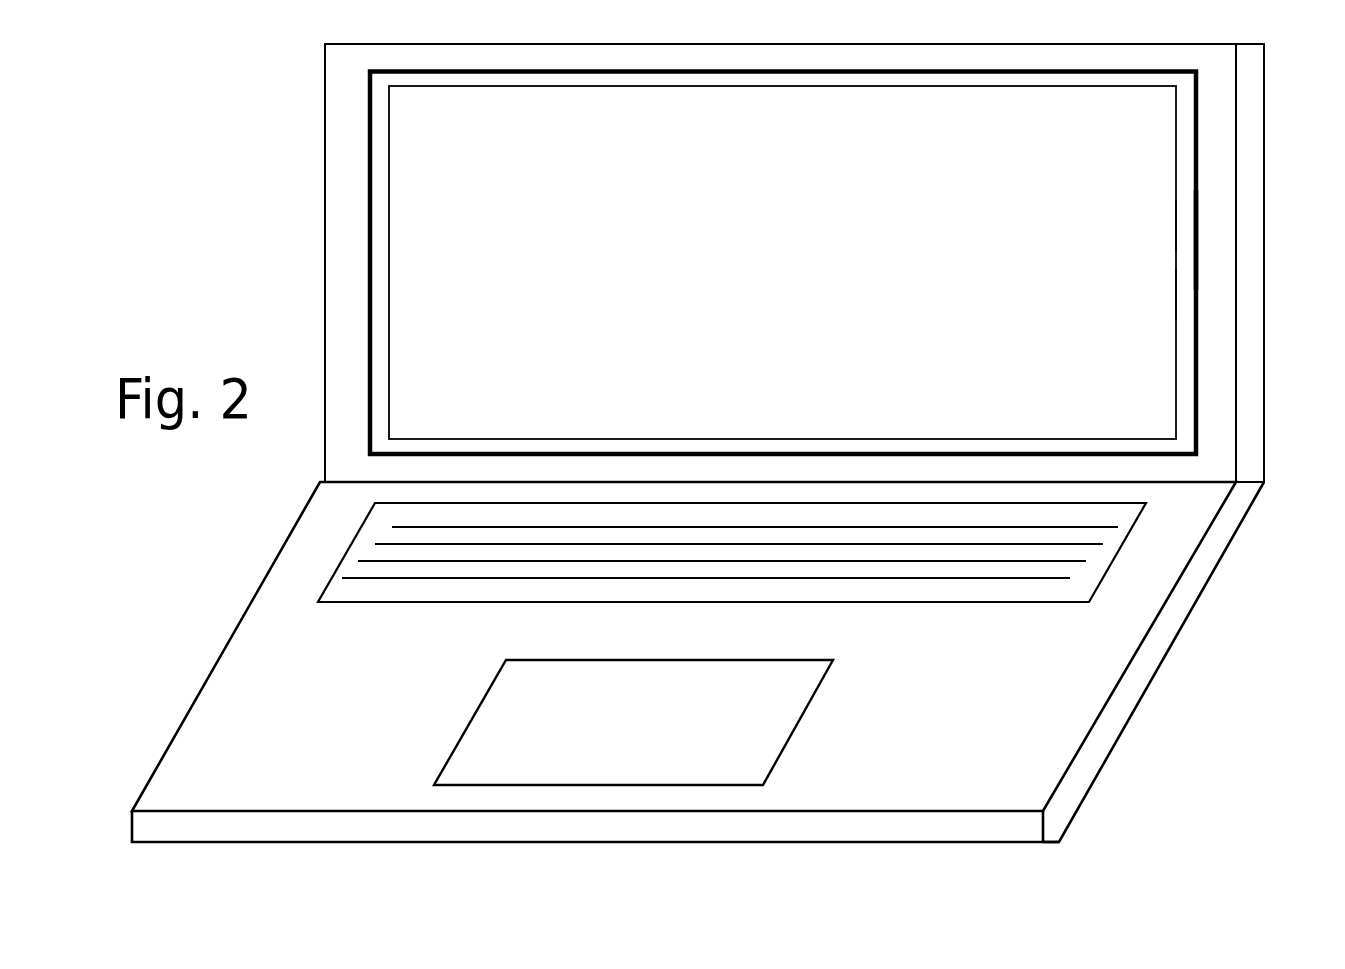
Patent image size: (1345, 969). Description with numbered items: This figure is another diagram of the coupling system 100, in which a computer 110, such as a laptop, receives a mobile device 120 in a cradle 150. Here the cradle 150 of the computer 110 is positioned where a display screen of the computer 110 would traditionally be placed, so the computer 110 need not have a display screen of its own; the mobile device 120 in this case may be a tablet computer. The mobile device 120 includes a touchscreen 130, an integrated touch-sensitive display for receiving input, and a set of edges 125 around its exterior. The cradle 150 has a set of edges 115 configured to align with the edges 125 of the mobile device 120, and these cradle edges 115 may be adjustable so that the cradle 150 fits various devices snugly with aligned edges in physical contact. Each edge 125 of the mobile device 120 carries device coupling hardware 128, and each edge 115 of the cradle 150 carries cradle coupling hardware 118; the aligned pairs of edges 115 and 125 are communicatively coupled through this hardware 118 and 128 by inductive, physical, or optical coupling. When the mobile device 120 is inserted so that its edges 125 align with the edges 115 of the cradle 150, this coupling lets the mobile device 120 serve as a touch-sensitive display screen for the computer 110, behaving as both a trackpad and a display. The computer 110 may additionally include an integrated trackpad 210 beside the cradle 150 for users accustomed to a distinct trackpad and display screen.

The coupling system 100 is at (220, 108).
The computer 110 is at (312, 223).
The cradle edges 115 is at (1198, 215).
The cradle coupling hardware 118 is at (1198, 263).
The mobile device 120 is at (804, 277).
The device edges 125 is at (1176, 295).
The device coupling hardware 128 is at (1176, 224).
The touchscreen 130 is at (1043, 381).
The cradle 150 is at (358, 316).
The integrated trackpad 210 is at (654, 738).